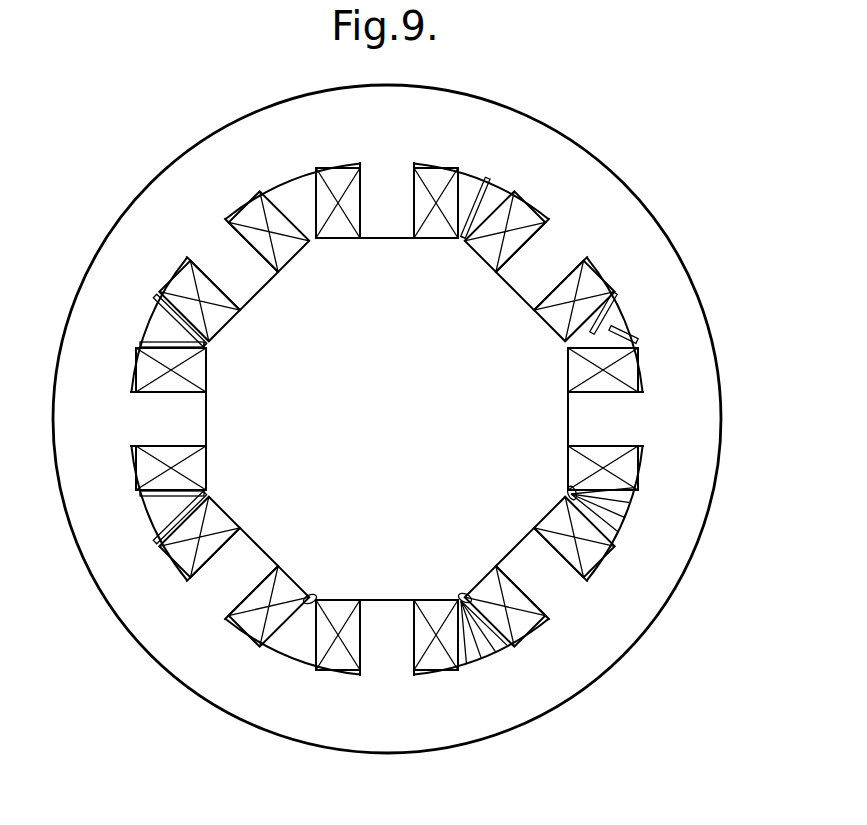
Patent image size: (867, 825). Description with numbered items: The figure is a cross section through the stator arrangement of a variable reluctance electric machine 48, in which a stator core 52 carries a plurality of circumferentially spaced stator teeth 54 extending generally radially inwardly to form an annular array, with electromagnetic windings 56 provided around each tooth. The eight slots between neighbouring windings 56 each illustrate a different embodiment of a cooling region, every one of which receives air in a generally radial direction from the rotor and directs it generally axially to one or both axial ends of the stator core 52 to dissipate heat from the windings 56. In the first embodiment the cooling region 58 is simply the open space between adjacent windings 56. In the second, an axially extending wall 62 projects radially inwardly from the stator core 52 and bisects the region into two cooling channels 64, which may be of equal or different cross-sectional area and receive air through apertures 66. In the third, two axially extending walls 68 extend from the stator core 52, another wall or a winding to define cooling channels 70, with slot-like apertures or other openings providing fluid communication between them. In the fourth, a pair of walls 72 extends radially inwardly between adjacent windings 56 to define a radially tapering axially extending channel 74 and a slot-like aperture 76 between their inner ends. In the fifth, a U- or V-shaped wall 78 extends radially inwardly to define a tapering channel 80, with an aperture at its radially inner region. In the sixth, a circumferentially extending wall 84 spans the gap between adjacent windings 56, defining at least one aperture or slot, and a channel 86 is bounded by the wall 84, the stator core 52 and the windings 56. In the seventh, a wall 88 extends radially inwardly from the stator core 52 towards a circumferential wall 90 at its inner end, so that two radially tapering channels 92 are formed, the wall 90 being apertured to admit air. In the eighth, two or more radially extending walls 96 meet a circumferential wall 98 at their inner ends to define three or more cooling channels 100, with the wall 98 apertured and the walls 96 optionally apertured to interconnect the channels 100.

The variable reluctance electric machine 48 is at (188, 121).
The stator core 52 is at (312, 110).
The stator teeth 54 is at (388, 222).
The electromagnetic windings 56 is at (580, 372).
The cooling region 58 is at (297, 195).
The axially extending wall 62 is at (497, 200).
The cooling channels 64 is at (467, 183).
The apertures 66 is at (463, 240).
The axially extending walls 68 is at (623, 300).
The cooling channels 70 is at (618, 317).
The walls 72 is at (168, 313).
The radially tapering axially extending channel 74 is at (160, 330).
The slot-like aperture 76 is at (202, 340).
The wall 78 is at (140, 498).
The radially tapering axially extending channel 80 is at (165, 507).
The circumferentially extending wall 84 is at (311, 597).
The channel 86 is at (292, 645).
The wall 88 is at (487, 650).
The wall 90 is at (465, 597).
The radially tapering axially extending channels 92 is at (470, 658).
The radially extending walls 96 is at (628, 502).
The wall 98 is at (567, 493).
The cooling channels 100 is at (577, 487).